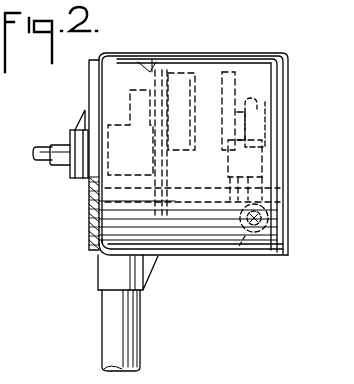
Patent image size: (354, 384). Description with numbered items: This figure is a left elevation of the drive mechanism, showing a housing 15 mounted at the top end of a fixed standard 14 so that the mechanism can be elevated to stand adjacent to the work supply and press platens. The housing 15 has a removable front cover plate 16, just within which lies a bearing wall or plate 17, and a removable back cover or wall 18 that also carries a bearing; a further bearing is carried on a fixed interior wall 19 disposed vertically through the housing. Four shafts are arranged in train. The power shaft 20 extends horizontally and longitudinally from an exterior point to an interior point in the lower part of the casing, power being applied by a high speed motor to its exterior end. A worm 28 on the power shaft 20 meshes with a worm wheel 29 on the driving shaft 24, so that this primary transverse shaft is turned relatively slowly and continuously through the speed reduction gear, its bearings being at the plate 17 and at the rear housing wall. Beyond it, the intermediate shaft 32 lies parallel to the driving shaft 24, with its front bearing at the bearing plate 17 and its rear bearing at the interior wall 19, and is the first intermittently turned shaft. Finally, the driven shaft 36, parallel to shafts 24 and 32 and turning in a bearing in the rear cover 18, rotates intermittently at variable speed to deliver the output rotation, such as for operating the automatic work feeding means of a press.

The fixed standard 14 is at (127, 328).
The housing 15 is at (98, 246).
The removable front cover plate 16 is at (287, 227).
The bearing wall or plate 17 is at (270, 170).
The removable back cover or wall 18 is at (84, 174).
The fixed interior wall 19 is at (172, 58).
The power shaft 20 is at (256, 240).
The driving shaft 24 is at (42, 158).
The worm 28 is at (238, 248).
The worm wheel 29 is at (258, 101).
The intermediate shaft 32 is at (267, 148).
The driven shaft 36 is at (57, 145).